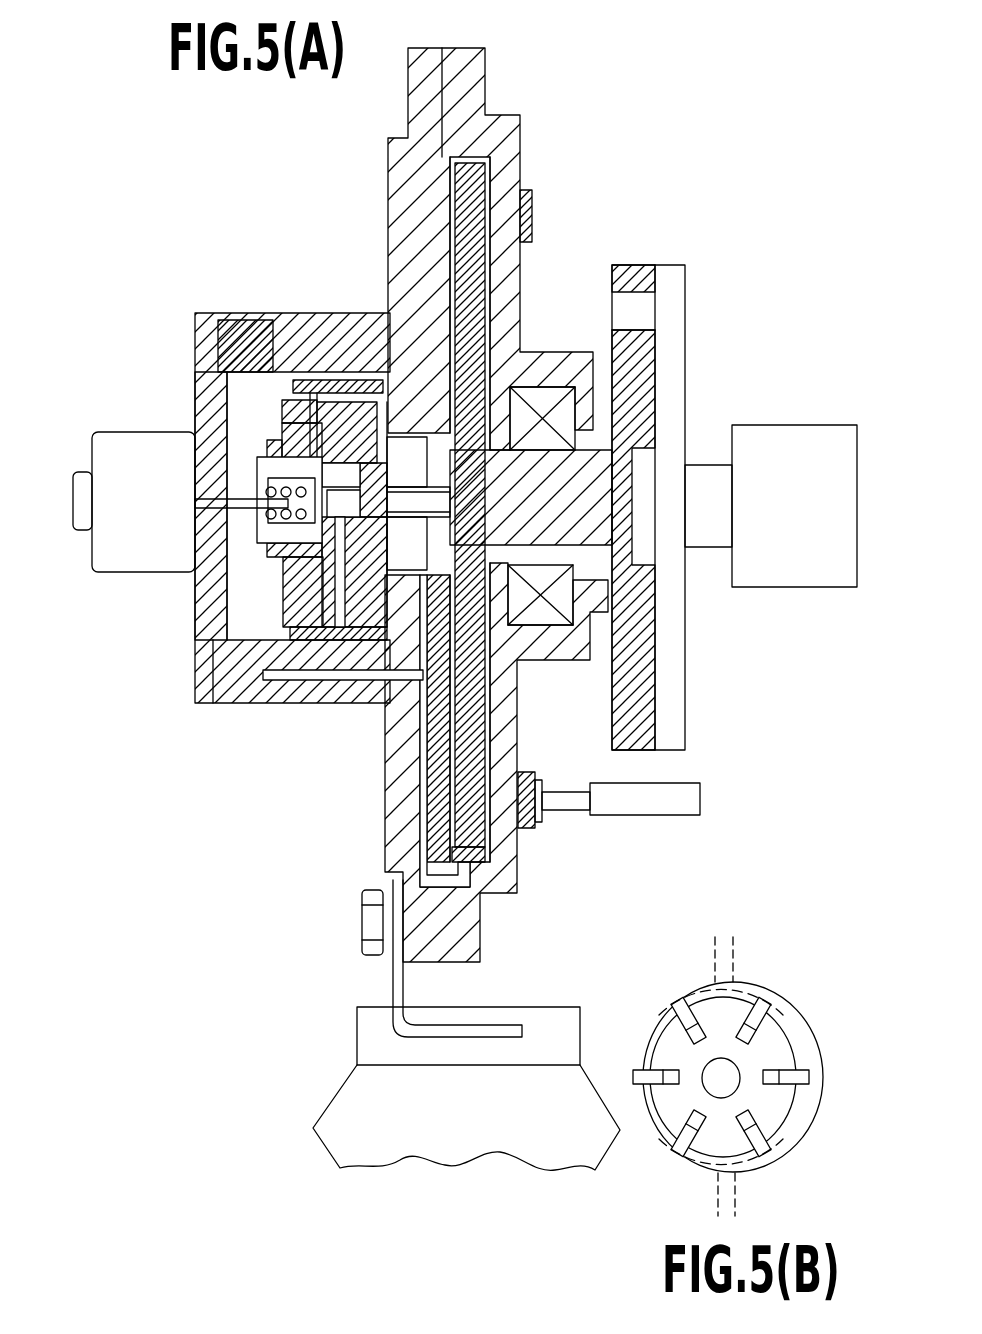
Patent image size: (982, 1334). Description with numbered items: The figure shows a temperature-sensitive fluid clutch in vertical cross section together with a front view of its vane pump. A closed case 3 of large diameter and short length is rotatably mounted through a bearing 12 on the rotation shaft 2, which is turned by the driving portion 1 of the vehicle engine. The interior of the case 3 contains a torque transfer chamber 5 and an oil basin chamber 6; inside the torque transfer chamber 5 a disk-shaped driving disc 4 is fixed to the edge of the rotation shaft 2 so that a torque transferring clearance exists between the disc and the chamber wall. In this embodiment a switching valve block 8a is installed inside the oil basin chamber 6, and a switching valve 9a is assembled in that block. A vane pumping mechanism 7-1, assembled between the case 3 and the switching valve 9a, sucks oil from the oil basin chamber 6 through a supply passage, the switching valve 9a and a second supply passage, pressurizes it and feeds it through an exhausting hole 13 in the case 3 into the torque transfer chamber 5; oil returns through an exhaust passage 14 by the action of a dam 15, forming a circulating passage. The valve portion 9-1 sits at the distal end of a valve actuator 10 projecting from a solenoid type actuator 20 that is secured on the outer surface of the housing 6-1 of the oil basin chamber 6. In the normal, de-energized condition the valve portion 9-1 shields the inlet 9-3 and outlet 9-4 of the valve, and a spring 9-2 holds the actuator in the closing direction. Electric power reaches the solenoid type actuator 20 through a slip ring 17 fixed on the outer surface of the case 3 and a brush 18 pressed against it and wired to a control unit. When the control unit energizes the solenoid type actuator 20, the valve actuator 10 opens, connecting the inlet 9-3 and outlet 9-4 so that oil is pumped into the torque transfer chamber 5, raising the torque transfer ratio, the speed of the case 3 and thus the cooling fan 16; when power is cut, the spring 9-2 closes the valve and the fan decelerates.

In FIG. 5A, the driving portion 1 is at (795, 455).
In FIG. 5A, the rotation shaft 2 is at (652, 273).
In FIG. 5A, the closed case 3 is at (514, 97).
In FIG. 5A, the driving disc 4 is at (470, 322).
In FIG. 5A, the torque transfer chamber 5 is at (486, 266).
In FIG. 5A, the oil basin chamber 6 is at (240, 655).
In FIG. 5A, the housing 6-1 is at (210, 600).
In FIG. 5A, the vane pumping mechanism 7-1 is at (412, 452).
In FIG. 5B, the vane pumping mechanism 7-1 is at (798, 997).
In FIG. 5A, the switching valve block 8a is at (295, 403).
In FIG. 5A, the switching valve 9a is at (262, 548).
In FIG. 5A, the valve portion 9-1 is at (302, 600).
In FIG. 5A, the spring 9-2 is at (285, 445).
In FIG. 5A, the inlet 9-3 is at (377, 600).
In FIG. 5A, the outlet 9-4 is at (332, 418).
In FIG. 5A, the valve actuator 10 is at (245, 470).
In FIG. 5A, the bearing 12 is at (533, 213).
In FIG. 5A, the exhausting hole 13 is at (490, 678).
In FIG. 5A, the exhaust passage 14 is at (430, 808).
In FIG. 5A, the dam 15 is at (486, 893).
In FIG. 5A, the cooling fan 16 is at (346, 1112).
In FIG. 5A, the slip ring 17 is at (540, 822).
In FIG. 5A, the brush 18 is at (545, 776).
In FIG. 5A, the solenoid type actuator 20 is at (150, 540).